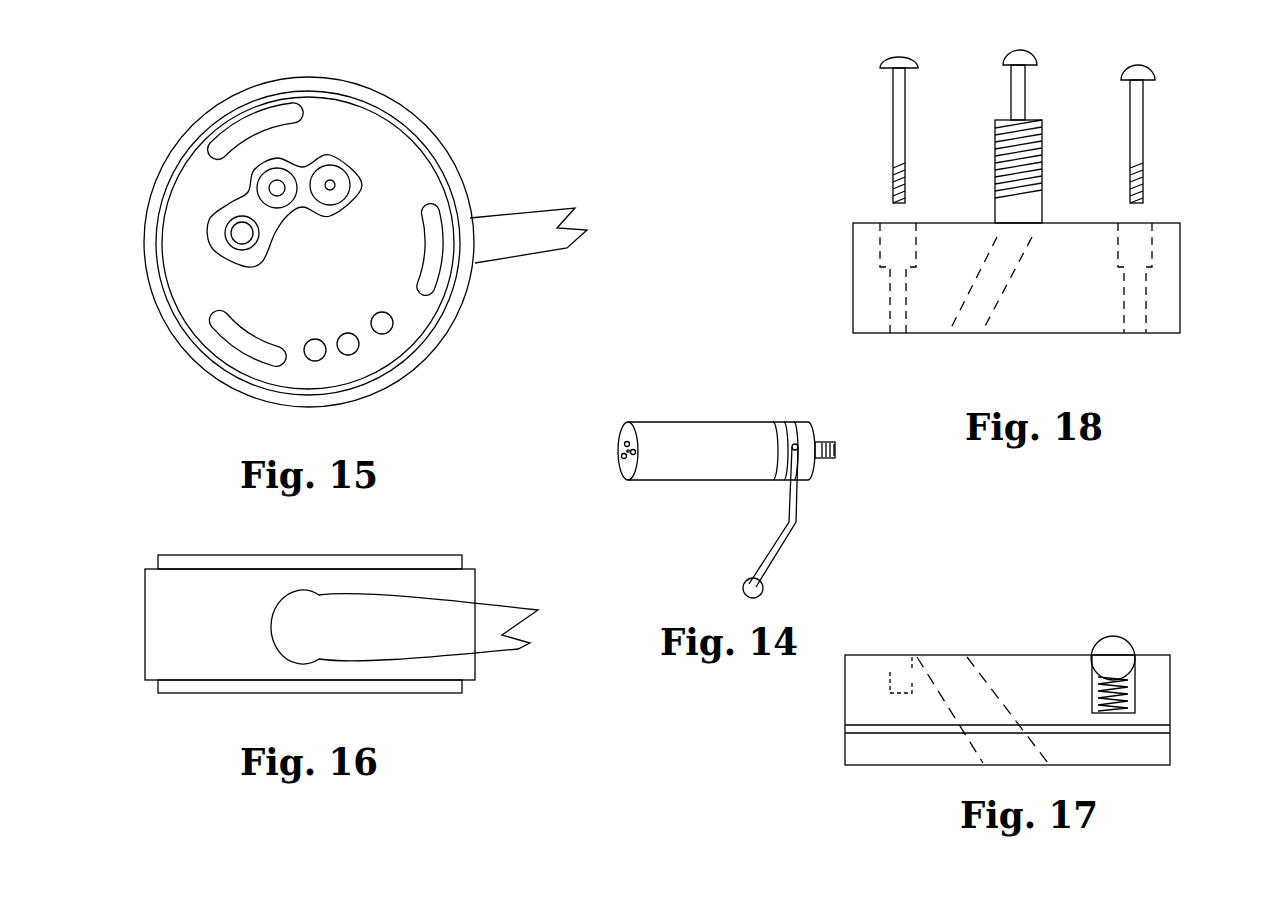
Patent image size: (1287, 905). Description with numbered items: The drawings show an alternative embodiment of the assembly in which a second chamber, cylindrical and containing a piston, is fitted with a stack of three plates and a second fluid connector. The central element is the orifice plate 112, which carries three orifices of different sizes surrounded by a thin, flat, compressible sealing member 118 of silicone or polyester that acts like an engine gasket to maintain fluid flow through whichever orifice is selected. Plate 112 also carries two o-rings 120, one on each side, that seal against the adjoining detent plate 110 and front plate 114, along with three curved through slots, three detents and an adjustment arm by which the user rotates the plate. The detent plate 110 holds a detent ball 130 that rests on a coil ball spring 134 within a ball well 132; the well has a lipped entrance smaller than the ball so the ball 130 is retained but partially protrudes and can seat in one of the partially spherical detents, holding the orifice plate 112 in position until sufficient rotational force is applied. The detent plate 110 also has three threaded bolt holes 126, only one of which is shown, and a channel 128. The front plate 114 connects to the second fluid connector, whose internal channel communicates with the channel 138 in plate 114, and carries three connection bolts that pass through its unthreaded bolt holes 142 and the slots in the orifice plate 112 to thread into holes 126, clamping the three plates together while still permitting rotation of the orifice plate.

In FIG. 14, the detent plate 110 is at (777, 423).
In FIG. 17, the detent plate 110 is at (1020, 643).
In FIG. 15, the orifice plate 112 is at (415, 367).
In FIG. 16, the orifice plate 112 is at (193, 645).
In FIG. 14, the orifice plate 112 is at (790, 423).
In FIG. 14, the front plate 114 is at (803, 427).
In FIG. 18, the front plate 114 is at (1053, 322).
In FIG. 15, the sealing member 118 is at (303, 167).
In FIG. 15, the o-ring 120 is at (442, 152).
In FIG. 17, the threaded bolt holes 126 is at (902, 655).
In FIG. 17, the channel 128 is at (948, 667).
In FIG. 17, the detent ball 130 is at (1113, 647).
In FIG. 17, the ball well 132 is at (1138, 670).
In FIG. 17, the ball spring 134 is at (1135, 700).
In FIG. 18, the channel 138 is at (972, 318).
In FIG. 18, the unthreaded bolt holes 142 is at (1133, 322).